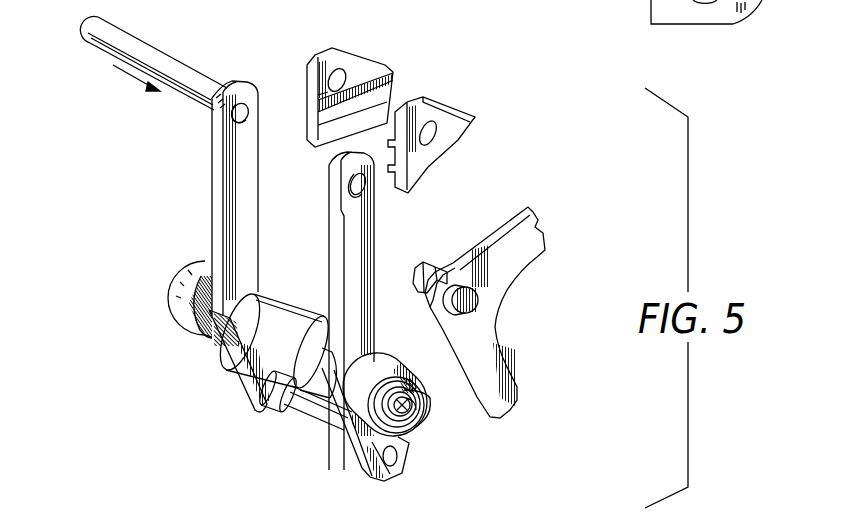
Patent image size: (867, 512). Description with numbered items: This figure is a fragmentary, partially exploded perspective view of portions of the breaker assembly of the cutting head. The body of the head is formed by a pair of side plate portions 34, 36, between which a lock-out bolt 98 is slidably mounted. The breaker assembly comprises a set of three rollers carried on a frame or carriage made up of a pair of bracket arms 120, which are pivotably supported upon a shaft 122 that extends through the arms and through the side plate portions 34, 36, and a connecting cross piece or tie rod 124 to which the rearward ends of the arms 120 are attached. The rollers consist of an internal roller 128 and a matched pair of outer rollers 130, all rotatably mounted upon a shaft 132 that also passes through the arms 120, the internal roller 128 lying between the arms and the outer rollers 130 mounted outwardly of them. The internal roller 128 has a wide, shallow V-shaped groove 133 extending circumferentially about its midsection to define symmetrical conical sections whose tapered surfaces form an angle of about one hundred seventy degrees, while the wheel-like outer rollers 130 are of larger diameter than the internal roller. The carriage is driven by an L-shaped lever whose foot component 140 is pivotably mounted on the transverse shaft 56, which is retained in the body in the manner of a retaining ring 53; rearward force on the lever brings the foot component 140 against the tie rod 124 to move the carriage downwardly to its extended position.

The side plate portion 34 is at (348, 62).
The side plate portion 36 is at (446, 118).
The retaining ring 53 is at (405, 405).
The transverse shaft 56 is at (441, 265).
The lock-out bolt 98 is at (590, 27).
The bracket arm 120 is at (237, 190).
The shaft 122 is at (177, 72).
The tie rod 124 is at (296, 408).
The internal roller 128 is at (305, 286).
The outer roller 130 is at (173, 297).
The shaft 132 is at (413, 425).
The V-shaped groove 133 is at (283, 333).
The foot component 140 is at (482, 356).